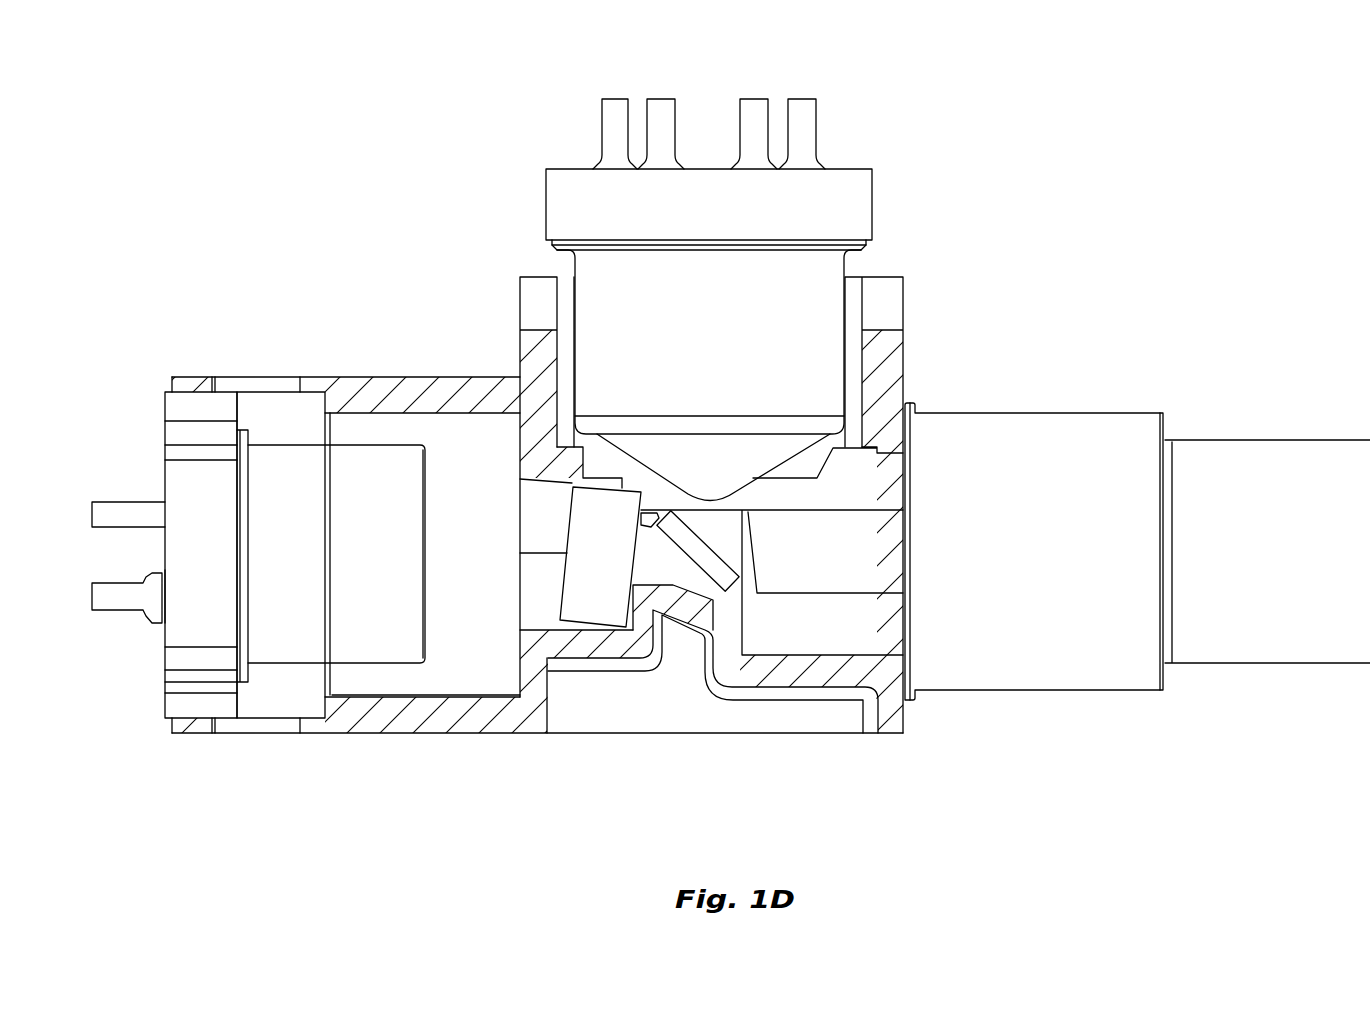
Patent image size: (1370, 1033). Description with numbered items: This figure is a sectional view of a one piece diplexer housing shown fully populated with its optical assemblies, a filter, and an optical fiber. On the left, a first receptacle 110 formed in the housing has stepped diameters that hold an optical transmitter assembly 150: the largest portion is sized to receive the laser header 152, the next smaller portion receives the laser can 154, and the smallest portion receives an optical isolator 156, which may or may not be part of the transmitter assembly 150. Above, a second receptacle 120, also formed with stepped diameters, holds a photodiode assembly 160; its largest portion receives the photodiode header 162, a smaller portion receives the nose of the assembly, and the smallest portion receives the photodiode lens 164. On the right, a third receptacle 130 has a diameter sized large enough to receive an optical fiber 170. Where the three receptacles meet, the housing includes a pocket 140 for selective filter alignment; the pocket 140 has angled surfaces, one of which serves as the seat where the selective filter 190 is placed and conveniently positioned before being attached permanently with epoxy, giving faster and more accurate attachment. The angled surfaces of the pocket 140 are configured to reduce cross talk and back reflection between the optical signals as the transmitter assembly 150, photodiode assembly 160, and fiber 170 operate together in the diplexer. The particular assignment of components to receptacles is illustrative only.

The first receptacle 110 is at (234, 594).
The second receptacle 120 is at (685, 475).
The third receptacle 130 is at (875, 630).
The pocket 140 is at (697, 553).
The optical transmitter assembly 150 is at (141, 570).
The laser header 152 is at (202, 620).
The laser can 154 is at (362, 610).
The optical isolator 156 is at (592, 532).
The photodiode assembly 160 is at (784, 260).
The photodiode header 162 is at (840, 199).
The photodiode lens 164 is at (722, 490).
The optical fiber 170 is at (1170, 425).
The selective filter 190 is at (697, 553).